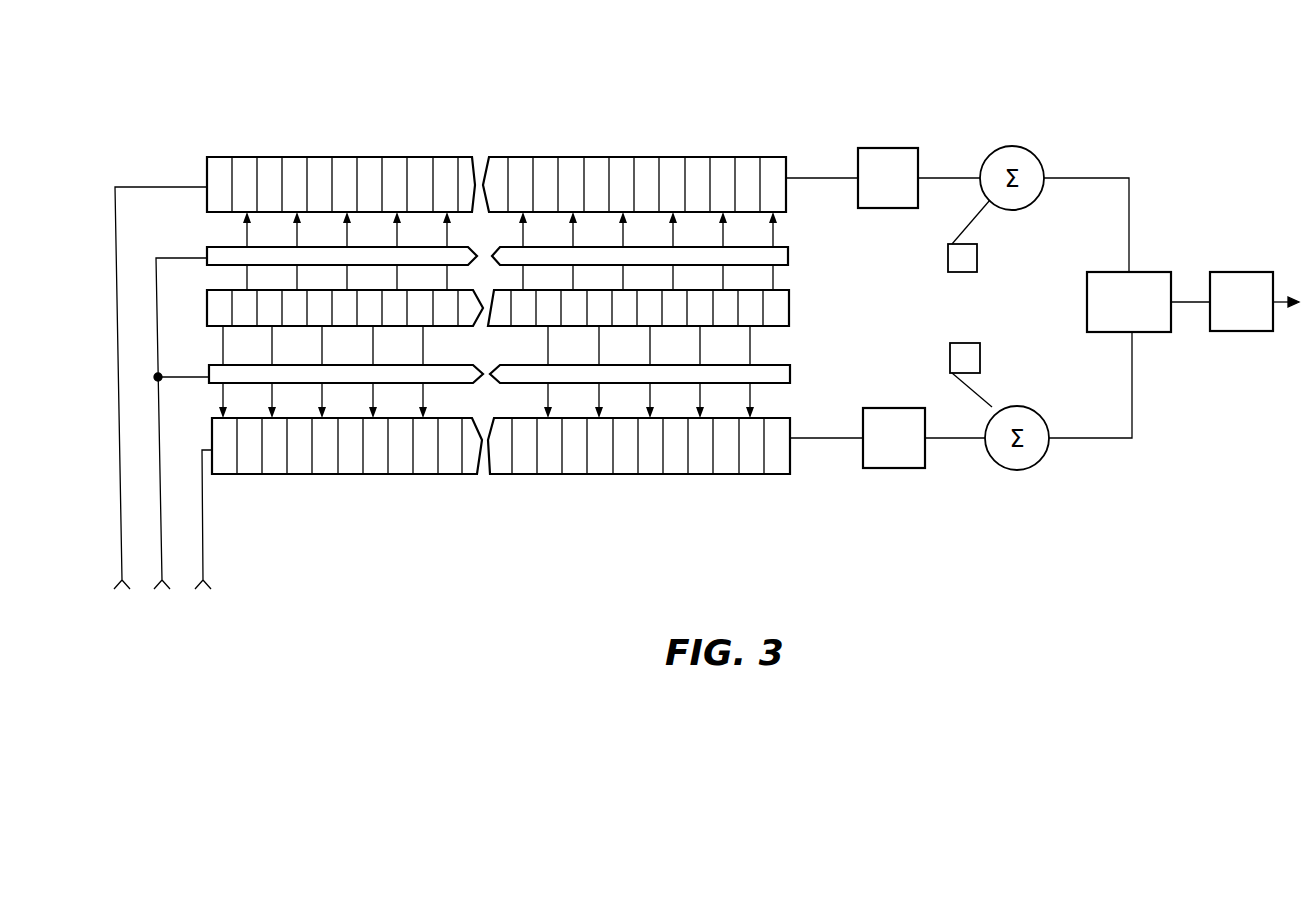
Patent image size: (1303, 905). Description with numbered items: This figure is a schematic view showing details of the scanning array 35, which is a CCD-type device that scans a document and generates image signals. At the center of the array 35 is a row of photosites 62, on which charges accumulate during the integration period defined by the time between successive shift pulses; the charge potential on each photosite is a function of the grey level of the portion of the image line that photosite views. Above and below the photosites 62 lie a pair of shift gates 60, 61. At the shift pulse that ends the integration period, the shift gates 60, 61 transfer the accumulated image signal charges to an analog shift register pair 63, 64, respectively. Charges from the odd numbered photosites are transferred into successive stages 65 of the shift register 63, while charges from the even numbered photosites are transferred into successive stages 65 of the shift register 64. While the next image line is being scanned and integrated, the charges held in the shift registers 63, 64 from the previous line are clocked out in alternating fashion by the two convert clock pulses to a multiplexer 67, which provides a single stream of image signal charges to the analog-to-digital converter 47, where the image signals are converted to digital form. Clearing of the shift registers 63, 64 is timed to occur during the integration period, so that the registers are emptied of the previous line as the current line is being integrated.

The scanning array 35 is at (725, 98).
The analog-to-digital converter 47 is at (1250, 272).
The shift gate 60 is at (207, 258).
The shift gate 61 is at (793, 371).
The photosites 62 is at (753, 292).
The shift register 63 is at (378, 128).
The shift register 64 is at (642, 505).
The stages 65 is at (645, 158).
The multiplexer 67 is at (1153, 275).